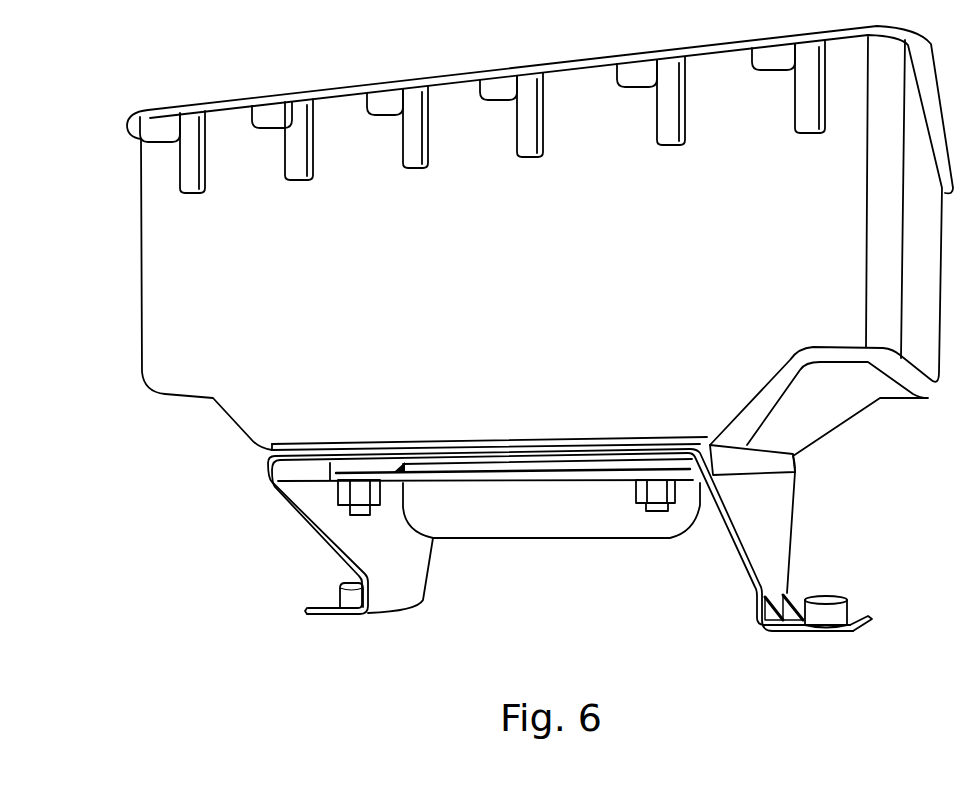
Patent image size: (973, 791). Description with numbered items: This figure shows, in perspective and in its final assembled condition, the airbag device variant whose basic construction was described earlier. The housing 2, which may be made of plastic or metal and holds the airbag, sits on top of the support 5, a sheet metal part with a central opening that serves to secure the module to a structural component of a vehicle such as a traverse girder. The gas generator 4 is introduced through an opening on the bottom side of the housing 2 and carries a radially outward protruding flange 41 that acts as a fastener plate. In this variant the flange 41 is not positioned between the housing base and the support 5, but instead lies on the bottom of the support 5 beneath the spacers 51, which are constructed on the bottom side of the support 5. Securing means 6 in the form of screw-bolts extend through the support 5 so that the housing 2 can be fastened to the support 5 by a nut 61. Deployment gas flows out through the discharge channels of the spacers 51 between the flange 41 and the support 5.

The housing 2 is at (176, 281).
The gas generator 4 is at (500, 520).
The flange 41 is at (338, 477).
The support 5 is at (341, 528).
The spacers 51 is at (600, 462).
The securing means 6 is at (398, 590).
The nut 61 is at (350, 492).